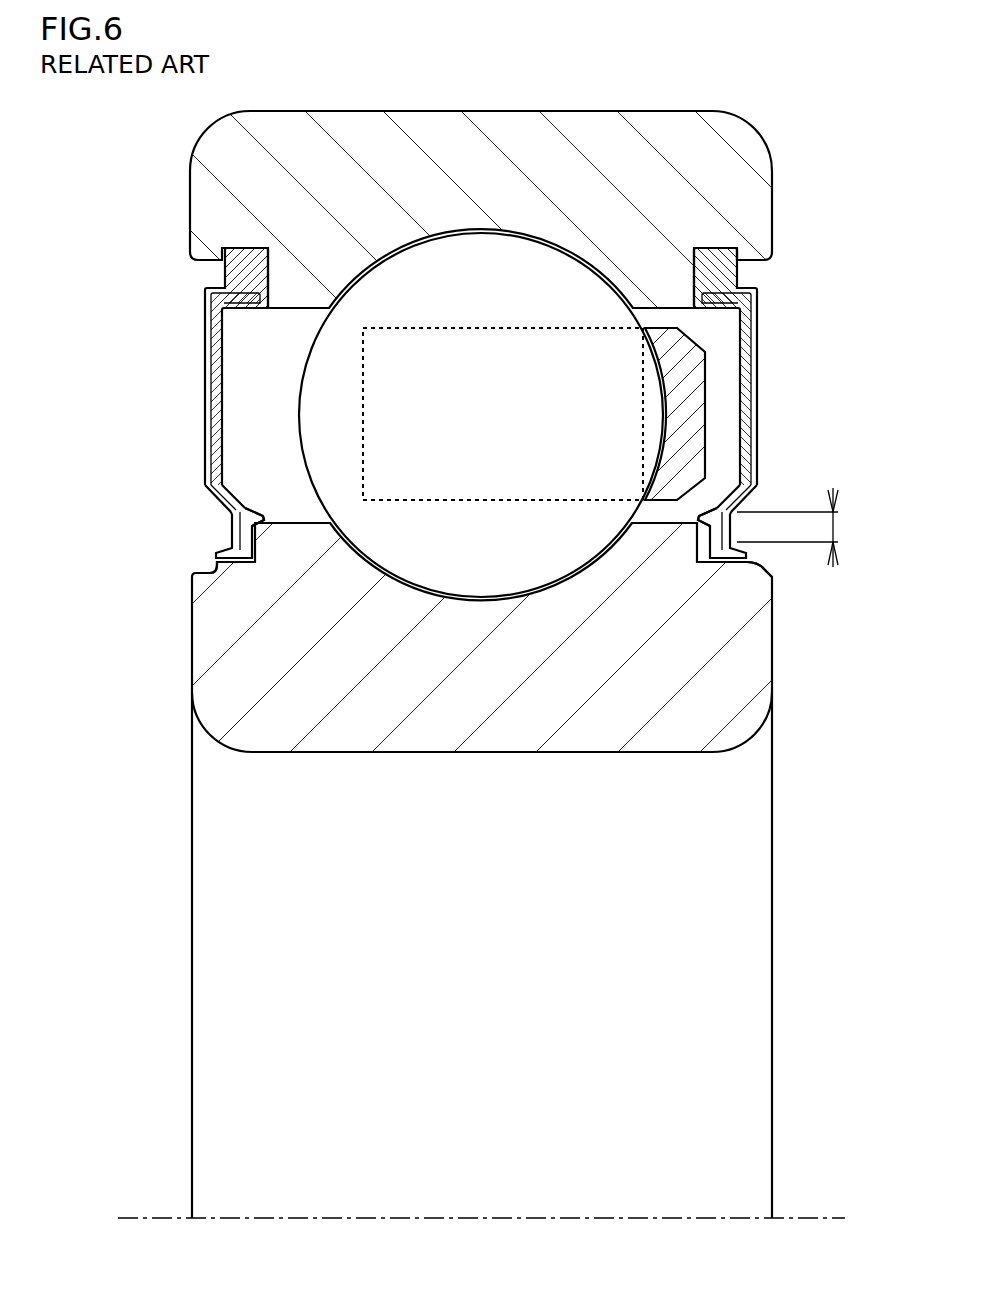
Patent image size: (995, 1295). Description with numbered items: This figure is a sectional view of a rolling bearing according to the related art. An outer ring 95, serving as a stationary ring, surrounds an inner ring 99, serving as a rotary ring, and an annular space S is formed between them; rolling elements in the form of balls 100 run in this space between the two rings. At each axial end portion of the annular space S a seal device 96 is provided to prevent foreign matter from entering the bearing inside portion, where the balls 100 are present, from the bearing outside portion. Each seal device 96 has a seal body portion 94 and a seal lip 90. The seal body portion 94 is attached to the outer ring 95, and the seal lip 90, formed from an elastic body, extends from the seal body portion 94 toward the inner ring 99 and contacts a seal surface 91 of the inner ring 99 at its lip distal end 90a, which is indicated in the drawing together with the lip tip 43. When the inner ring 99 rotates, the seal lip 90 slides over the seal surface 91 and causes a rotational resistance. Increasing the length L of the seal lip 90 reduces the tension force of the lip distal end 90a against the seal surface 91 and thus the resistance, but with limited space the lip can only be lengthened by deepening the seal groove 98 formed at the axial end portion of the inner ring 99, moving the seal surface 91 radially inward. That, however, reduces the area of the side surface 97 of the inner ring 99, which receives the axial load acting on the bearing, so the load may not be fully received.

The outer ring 95 is at (368, 140).
The balls 100 is at (525, 265).
The seal devices 96 is at (481, 422).
The seal body portion 94 is at (215, 389).
The seal groove 98 is at (225, 499).
The seal lip 90 is at (240, 533).
The lip tip 43 is at (254, 517).
The seal surface 91 is at (212, 556).
The lip distal end 90a is at (223, 562).
The side surface 97 is at (190, 645).
The inner ring 99 is at (280, 710).
The annular space S is at (262, 348).
The length of the seal lip L is at (797, 527).